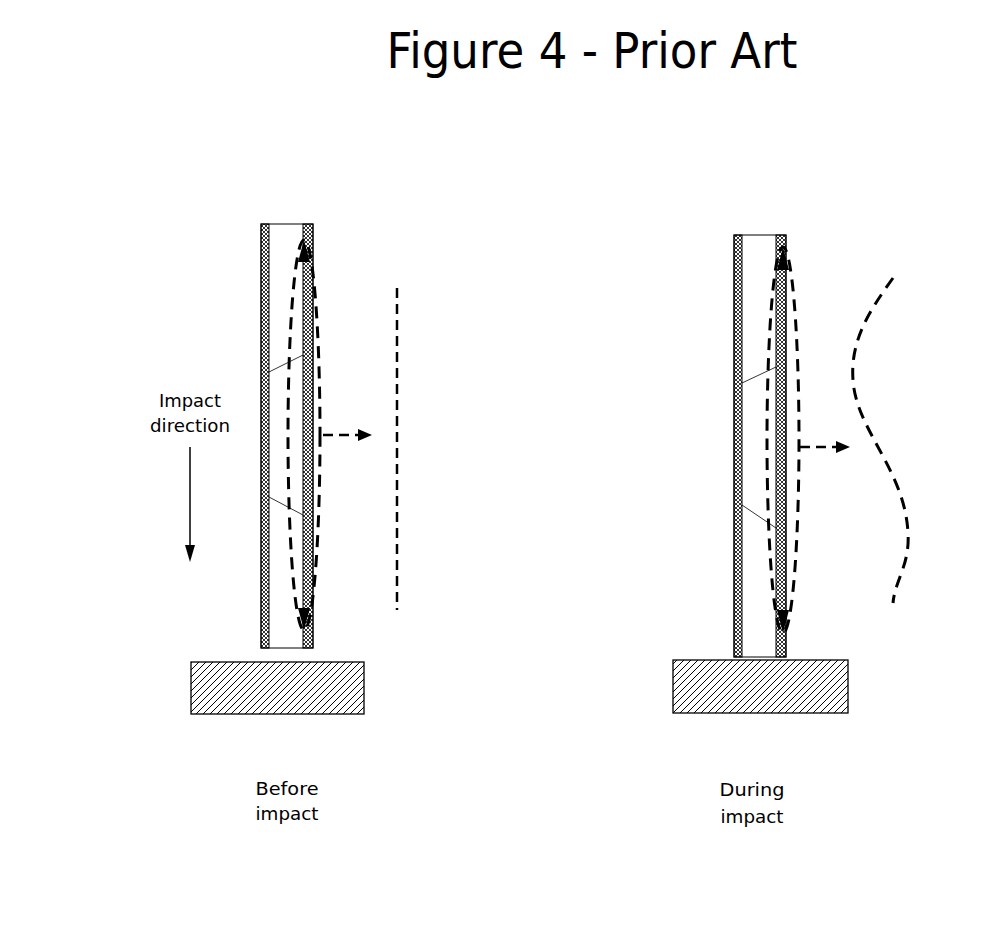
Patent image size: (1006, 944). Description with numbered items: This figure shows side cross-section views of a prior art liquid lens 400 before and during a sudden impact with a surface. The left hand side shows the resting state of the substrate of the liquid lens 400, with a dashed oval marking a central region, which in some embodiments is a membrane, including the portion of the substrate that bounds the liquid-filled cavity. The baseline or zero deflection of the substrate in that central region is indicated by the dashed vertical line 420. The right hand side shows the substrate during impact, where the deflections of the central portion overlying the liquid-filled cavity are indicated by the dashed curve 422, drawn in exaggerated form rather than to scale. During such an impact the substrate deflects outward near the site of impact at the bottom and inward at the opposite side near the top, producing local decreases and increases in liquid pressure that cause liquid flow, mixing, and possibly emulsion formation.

The liquid lens 400 is at (307, 425).
The dashed vertical line 420 is at (398, 533).
The dashed curve 422 is at (908, 555).